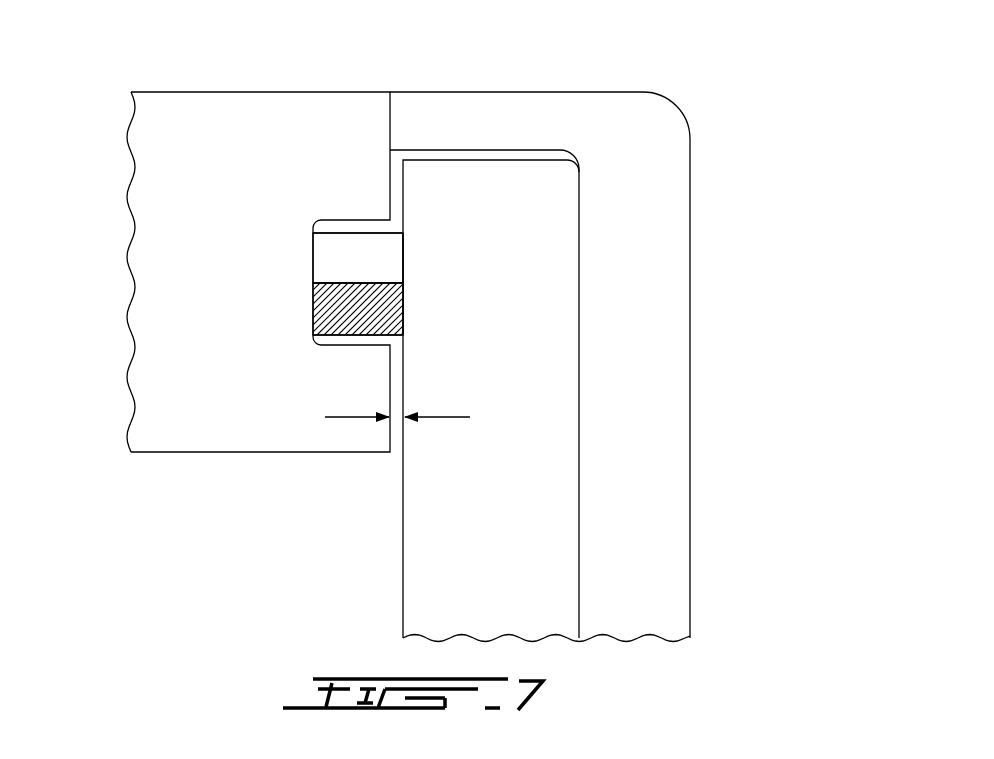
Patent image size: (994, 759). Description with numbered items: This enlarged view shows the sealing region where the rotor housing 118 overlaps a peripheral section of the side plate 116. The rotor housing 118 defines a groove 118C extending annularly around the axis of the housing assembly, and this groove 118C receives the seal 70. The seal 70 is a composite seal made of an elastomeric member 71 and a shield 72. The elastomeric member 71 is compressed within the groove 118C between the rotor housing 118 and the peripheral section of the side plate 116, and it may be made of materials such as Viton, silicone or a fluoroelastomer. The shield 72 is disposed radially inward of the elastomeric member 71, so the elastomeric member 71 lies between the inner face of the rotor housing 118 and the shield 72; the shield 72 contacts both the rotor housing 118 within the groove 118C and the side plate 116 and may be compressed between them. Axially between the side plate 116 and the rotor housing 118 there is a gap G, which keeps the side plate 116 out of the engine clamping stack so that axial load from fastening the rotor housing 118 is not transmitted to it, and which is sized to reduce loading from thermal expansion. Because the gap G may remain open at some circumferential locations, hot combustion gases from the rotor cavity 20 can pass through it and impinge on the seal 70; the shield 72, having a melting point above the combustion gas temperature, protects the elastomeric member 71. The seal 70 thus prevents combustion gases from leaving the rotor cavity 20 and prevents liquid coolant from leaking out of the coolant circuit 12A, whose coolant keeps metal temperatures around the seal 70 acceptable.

The rotor housing 118 is at (232, 155).
The groove 118C is at (312, 276).
The elastomeric member 71 is at (345, 248).
The shield 72 is at (345, 313).
The coolant circuit 12A is at (522, 156).
The side plate 116 is at (540, 268).
The seal 70 is at (389, 269).
The gap G is at (343, 419).
The rotor cavity 20 is at (246, 603).